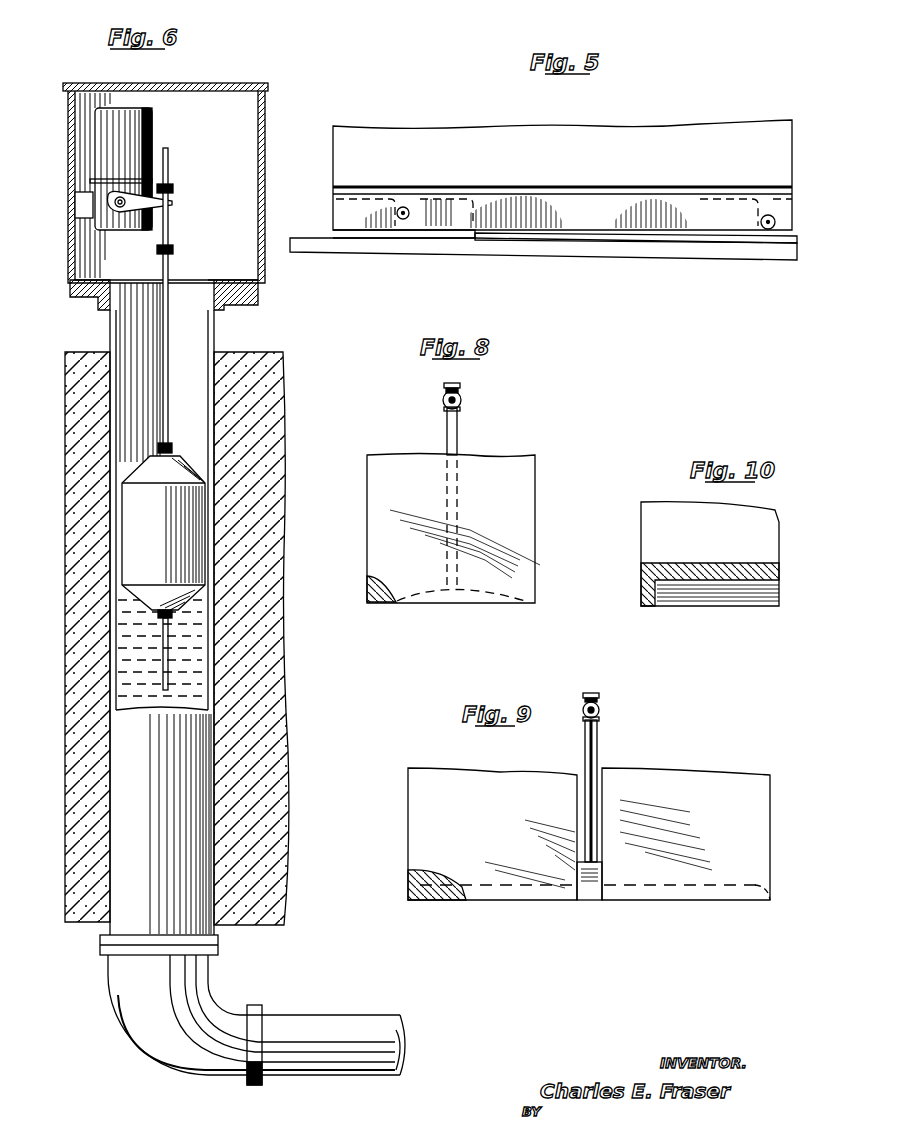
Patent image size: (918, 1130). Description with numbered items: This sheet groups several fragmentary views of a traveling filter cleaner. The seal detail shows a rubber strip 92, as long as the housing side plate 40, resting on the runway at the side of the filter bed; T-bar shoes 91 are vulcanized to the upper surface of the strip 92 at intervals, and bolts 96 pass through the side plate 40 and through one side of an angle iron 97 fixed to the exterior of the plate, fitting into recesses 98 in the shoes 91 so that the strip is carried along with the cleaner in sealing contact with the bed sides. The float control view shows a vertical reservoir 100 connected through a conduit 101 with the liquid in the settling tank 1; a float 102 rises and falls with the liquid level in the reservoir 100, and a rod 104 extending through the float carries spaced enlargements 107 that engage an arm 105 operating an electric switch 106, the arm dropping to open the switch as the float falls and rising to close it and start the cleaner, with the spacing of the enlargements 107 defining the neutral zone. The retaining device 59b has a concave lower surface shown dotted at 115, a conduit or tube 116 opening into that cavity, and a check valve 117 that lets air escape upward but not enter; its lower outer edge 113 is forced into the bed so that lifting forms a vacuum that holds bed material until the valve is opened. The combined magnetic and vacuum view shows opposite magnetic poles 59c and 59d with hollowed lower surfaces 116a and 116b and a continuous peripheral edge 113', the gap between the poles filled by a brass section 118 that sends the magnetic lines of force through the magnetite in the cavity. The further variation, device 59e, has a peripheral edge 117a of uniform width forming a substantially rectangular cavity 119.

In FIG. 6, the settling tank 1 is at (70, 926).
In FIG. 5, the housing side plate 40 is at (398, 128).
In FIG. 5, the shoes 91 is at (335, 230).
In FIG. 5, the strip 92 is at (487, 251).
In FIG. 5, the bolts 96 is at (405, 207).
In FIG. 5, the angle iron 97 is at (519, 191).
In FIG. 5, the recesses 98 is at (438, 200).
In FIG. 6, the vertical reservoir 100 is at (200, 680).
In FIG. 6, the conduit 101 is at (328, 1022).
In FIG. 6, the float 102 is at (128, 530).
In FIG. 6, the rod 104 is at (160, 383).
In FIG. 6, the arm 105 is at (173, 203).
In FIG. 6, the electric switch 106 is at (154, 122).
In FIG. 6, the enlargements 107 is at (172, 185).
In FIG. 8, the lower outer edge 113 is at (383, 604).
In FIG. 9, the base pad 113' is at (597, 904).
In FIG. 8, the concave lower surface 115 is at (425, 596).
In FIG. 8, the conduit or tube 116 is at (459, 440).
In FIG. 9, the conduit or tube 116 is at (599, 742).
In FIG. 9, the hollowed lower surface 116a is at (503, 887).
In FIG. 9, the hollowed lower surface 116b is at (668, 887).
In FIG. 8, the check valve 117 is at (462, 400).
In FIG. 9, the check valve 117 is at (600, 710).
In FIG. 10, the peripheral edge 117a is at (645, 606).
In FIG. 9, the section of non-magnetic material 118 is at (600, 872).
In FIG. 10, the rectangular cavity 119 is at (745, 598).
In FIG. 8, the retaining device 59b is at (517, 472).
In FIG. 9, the magnetic pole 59c is at (492, 834).
In FIG. 9, the magnetic pole 59d is at (686, 834).
In FIG. 10, the block 59e is at (720, 528).